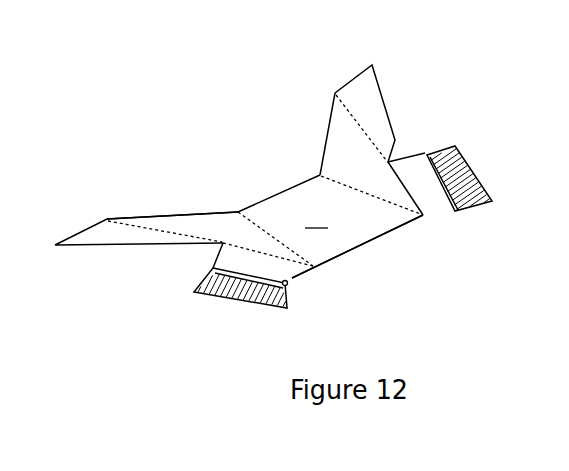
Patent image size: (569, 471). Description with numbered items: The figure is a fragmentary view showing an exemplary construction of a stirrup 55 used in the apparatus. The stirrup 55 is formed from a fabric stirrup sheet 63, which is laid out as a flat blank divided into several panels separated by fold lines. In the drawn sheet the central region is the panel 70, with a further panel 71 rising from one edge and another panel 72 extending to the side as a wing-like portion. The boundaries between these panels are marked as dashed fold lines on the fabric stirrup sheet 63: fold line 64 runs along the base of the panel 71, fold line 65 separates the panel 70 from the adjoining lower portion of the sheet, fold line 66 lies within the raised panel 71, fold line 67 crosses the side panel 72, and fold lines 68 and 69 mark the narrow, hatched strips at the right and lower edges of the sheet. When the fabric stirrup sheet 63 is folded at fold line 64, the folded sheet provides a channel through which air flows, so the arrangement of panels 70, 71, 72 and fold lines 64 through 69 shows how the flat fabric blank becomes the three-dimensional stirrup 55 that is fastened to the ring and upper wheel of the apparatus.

The stirrup 55 is at (203, 110).
The fabric stirrup sheet 63 is at (370, 245).
The fold line 64 is at (328, 182).
The fold line 65 is at (268, 227).
The fold line 66 is at (353, 130).
The fold line 67 is at (173, 228).
The fold line 68 is at (415, 193).
The fold line 69 is at (277, 262).
The panel 70 is at (318, 226).
The panel 71 is at (335, 148).
The panel 72 is at (218, 227).